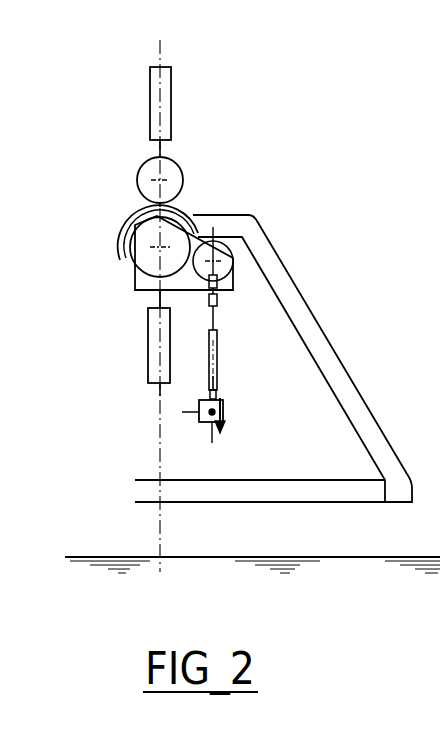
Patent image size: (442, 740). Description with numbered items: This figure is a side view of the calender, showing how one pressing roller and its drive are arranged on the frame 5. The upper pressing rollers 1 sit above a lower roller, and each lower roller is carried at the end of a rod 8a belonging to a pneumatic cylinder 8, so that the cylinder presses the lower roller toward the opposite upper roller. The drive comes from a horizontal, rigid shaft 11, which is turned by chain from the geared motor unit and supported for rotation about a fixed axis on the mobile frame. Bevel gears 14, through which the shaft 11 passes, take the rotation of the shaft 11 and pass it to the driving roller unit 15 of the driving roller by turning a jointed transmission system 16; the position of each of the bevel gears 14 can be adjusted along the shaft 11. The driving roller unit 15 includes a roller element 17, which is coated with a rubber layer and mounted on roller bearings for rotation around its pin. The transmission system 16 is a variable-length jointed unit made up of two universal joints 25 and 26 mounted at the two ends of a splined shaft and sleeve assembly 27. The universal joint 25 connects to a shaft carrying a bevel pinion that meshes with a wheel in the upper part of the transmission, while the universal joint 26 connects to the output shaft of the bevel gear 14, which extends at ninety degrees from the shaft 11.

The upper pressing rollers 1 is at (185, 168).
The frame 5 is at (290, 297).
The pneumatic cylinder 8 is at (148, 350).
The rod 8a is at (157, 301).
The shaft 11 is at (218, 434).
The bevel gears 14 is at (225, 407).
The driving roller unit 15 is at (112, 258).
The jointed transmission system 16 is at (225, 352).
The roller element 17 is at (127, 218).
The universal joint 25 is at (223, 305).
The universal joint 26 is at (220, 393).
The splined shaft and sleeve assembly 27 is at (207, 379).